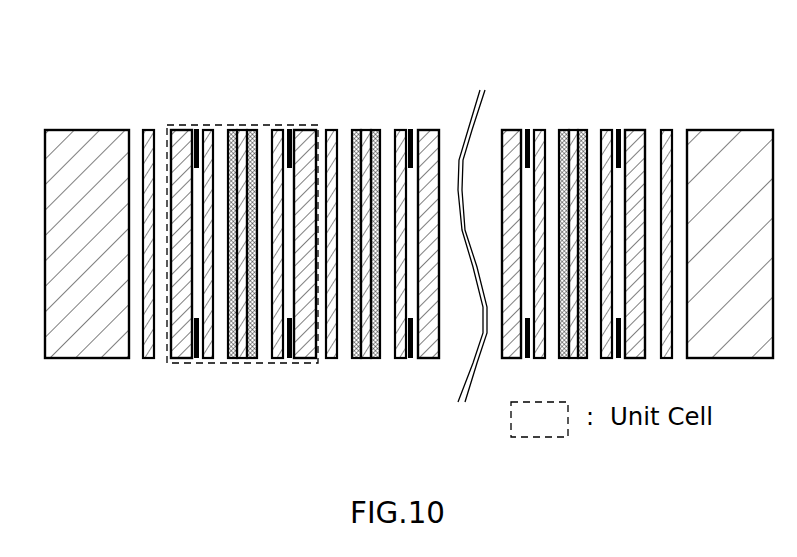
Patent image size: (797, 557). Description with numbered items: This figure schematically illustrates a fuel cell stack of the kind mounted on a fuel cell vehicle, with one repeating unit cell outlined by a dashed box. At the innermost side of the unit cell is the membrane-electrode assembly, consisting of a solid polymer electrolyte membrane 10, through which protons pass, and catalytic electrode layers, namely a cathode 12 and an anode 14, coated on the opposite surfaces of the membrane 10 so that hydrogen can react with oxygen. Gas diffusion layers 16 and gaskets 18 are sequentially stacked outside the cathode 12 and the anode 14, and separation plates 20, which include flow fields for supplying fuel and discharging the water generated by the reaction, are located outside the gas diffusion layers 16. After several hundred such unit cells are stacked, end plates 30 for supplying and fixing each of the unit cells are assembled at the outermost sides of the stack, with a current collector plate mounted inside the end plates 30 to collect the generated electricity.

The solid polymer electrolyte membrane 10 is at (241, 306).
The cathode 12 is at (279, 295).
The anode 14 is at (204, 300).
The gas diffusion layer 16 is at (258, 194).
The gasket 18 is at (266, 195).
The separation plate 20 is at (234, 304).
The end plate 30 is at (409, 195).